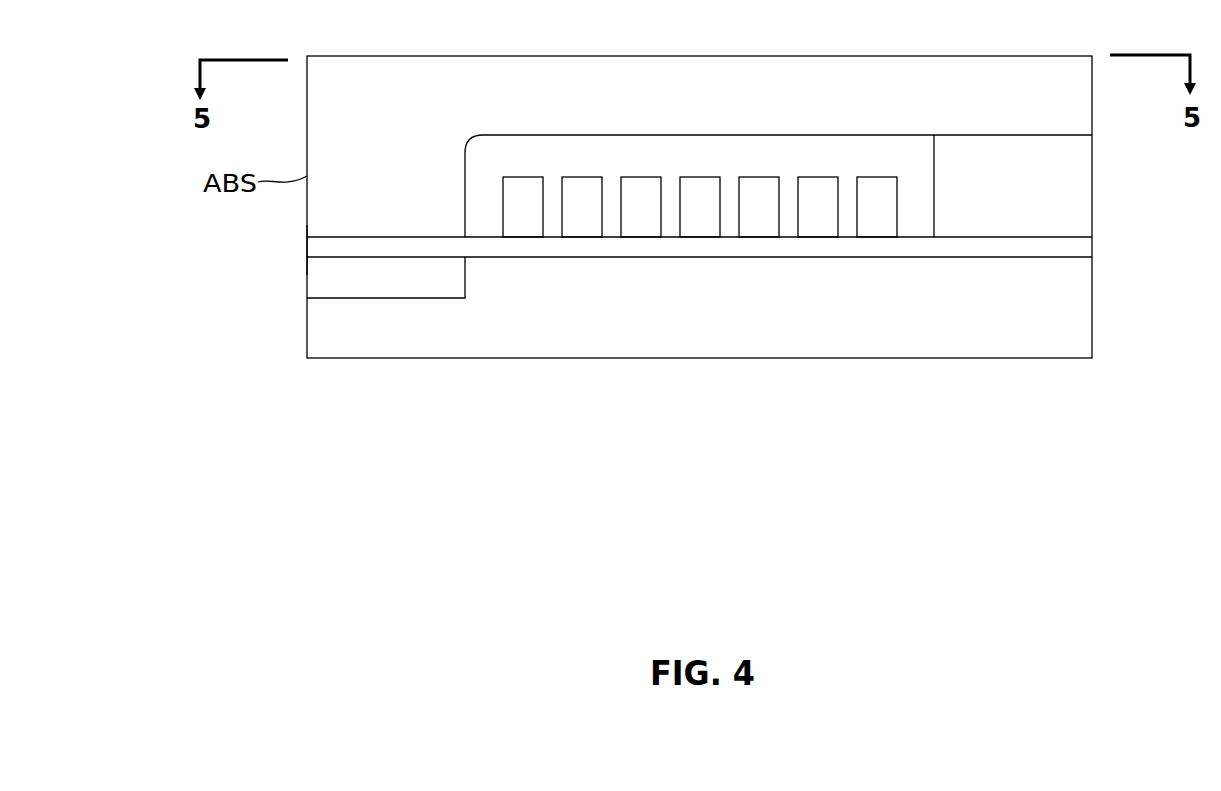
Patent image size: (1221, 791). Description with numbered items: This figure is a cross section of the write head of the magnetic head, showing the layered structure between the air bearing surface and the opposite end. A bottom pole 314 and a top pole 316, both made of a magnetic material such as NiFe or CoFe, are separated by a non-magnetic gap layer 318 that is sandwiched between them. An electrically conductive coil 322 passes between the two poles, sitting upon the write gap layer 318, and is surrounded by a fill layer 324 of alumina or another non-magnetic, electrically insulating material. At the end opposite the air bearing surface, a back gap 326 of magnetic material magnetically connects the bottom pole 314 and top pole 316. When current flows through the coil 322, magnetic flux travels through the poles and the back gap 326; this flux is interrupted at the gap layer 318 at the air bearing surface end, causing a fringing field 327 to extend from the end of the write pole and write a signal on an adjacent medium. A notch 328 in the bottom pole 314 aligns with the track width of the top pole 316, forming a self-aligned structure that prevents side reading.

The bottom pole 314 is at (772, 326).
The top pole 316 is at (680, 90).
The non-magnetic gap layer 318 is at (655, 246).
The electrically conductive coil 322 is at (812, 167).
The fill layer 324 is at (640, 156).
The back gap 326 is at (1050, 192).
The fringing field 327 is at (306, 222).
The notch 328 is at (322, 282).